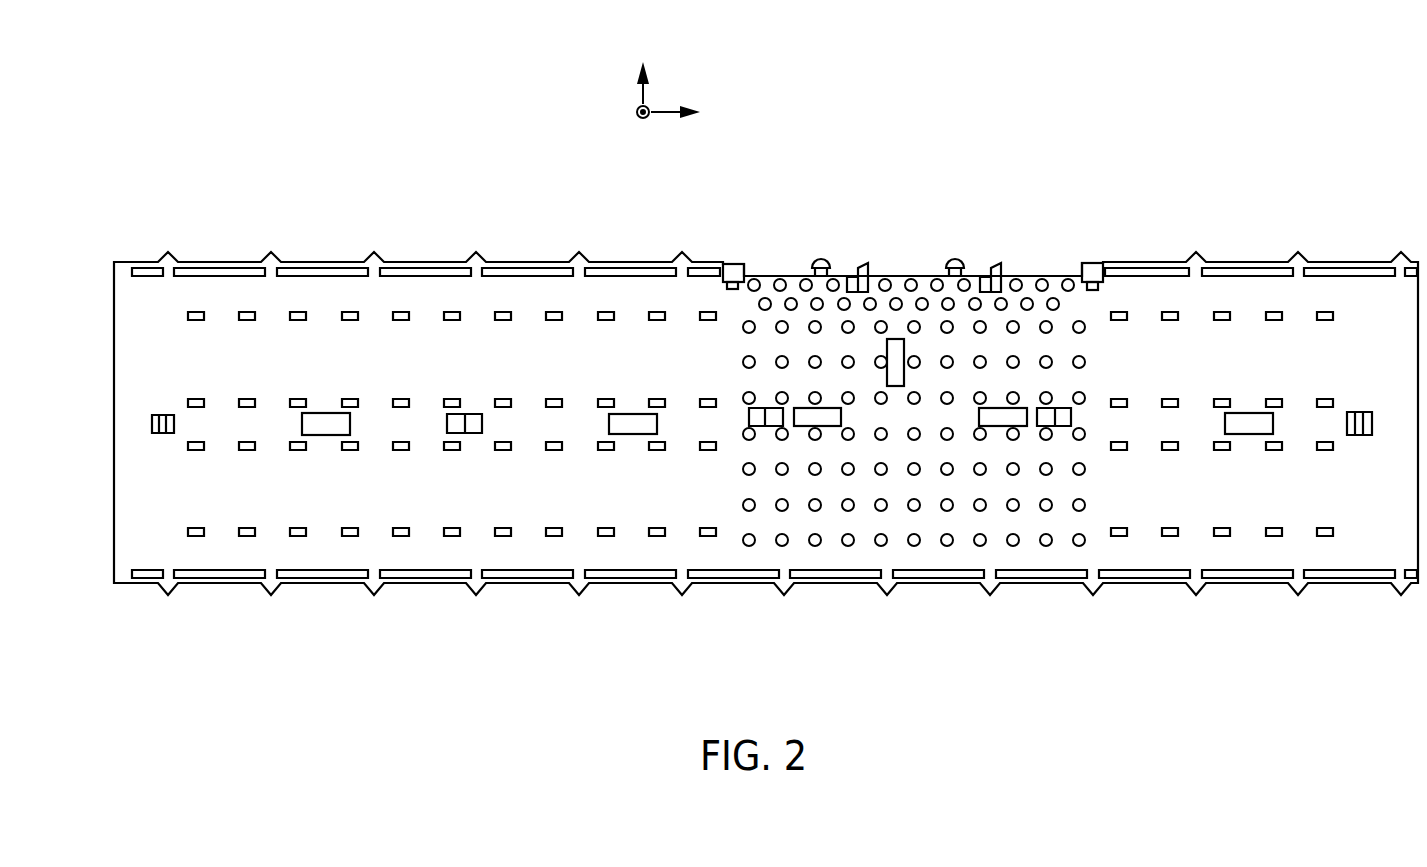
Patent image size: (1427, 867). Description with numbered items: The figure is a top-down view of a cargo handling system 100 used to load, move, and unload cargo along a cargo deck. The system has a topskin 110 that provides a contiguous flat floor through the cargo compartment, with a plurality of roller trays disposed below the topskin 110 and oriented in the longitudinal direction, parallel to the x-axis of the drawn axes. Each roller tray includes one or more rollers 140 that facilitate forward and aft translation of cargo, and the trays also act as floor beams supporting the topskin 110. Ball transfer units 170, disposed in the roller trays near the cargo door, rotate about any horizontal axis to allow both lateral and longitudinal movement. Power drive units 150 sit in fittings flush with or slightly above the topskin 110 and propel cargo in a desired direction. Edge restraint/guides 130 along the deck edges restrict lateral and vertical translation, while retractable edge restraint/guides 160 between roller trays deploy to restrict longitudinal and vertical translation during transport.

The cargo handling system 100 is at (181, 114).
The topskin 110 is at (335, 362).
The edge restraint/guides 130 is at (324, 270).
The rollers 140 is at (447, 318).
The power drive units 150 is at (626, 414).
The edge restraint/guides 160 is at (465, 414).
The ball transfer units 170 is at (810, 325).